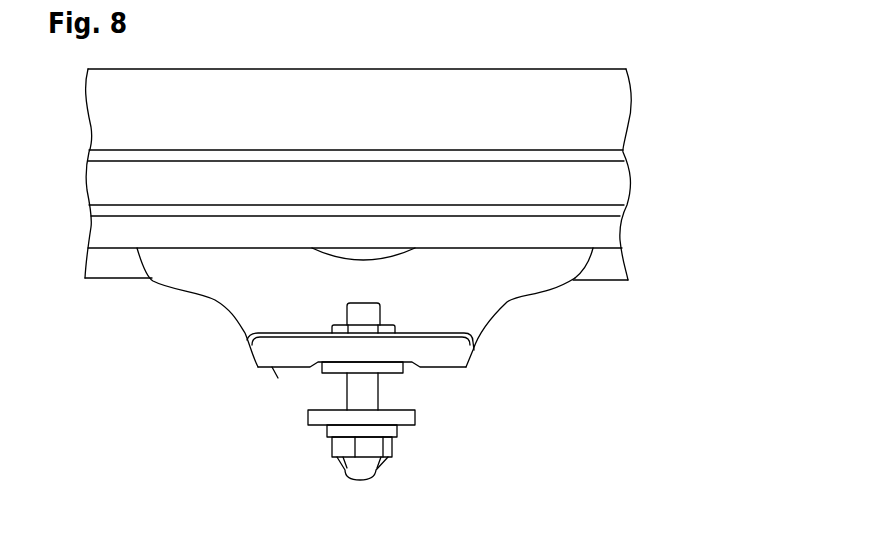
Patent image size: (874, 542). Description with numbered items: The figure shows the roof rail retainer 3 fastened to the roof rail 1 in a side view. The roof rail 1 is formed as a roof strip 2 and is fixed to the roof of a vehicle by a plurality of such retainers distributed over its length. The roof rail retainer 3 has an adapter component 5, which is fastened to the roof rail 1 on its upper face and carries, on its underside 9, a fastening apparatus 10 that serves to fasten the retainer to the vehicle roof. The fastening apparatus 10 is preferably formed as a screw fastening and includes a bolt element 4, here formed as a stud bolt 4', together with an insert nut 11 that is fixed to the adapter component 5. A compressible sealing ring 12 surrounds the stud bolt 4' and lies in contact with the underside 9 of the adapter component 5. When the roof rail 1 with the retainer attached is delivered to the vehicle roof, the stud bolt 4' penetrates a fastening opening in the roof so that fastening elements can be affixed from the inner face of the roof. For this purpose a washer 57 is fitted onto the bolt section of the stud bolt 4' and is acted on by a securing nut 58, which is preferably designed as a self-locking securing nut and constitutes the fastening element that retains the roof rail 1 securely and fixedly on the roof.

The roof rail 1 is at (390, 162).
The roof strip 2 is at (636, 110).
The roof rail retainer 3 is at (508, 328).
The bolt element 4 is at (422, 401).
The stud bolt 4' is at (422, 401).
The adapter component 5 is at (502, 282).
The underside 9 is at (272, 369).
The fastening apparatus 10 is at (428, 382).
The insert nut 11 is at (343, 327).
The compressible sealing ring 12 is at (333, 366).
The washer 57 is at (322, 417).
The securing nut 58 is at (375, 445).